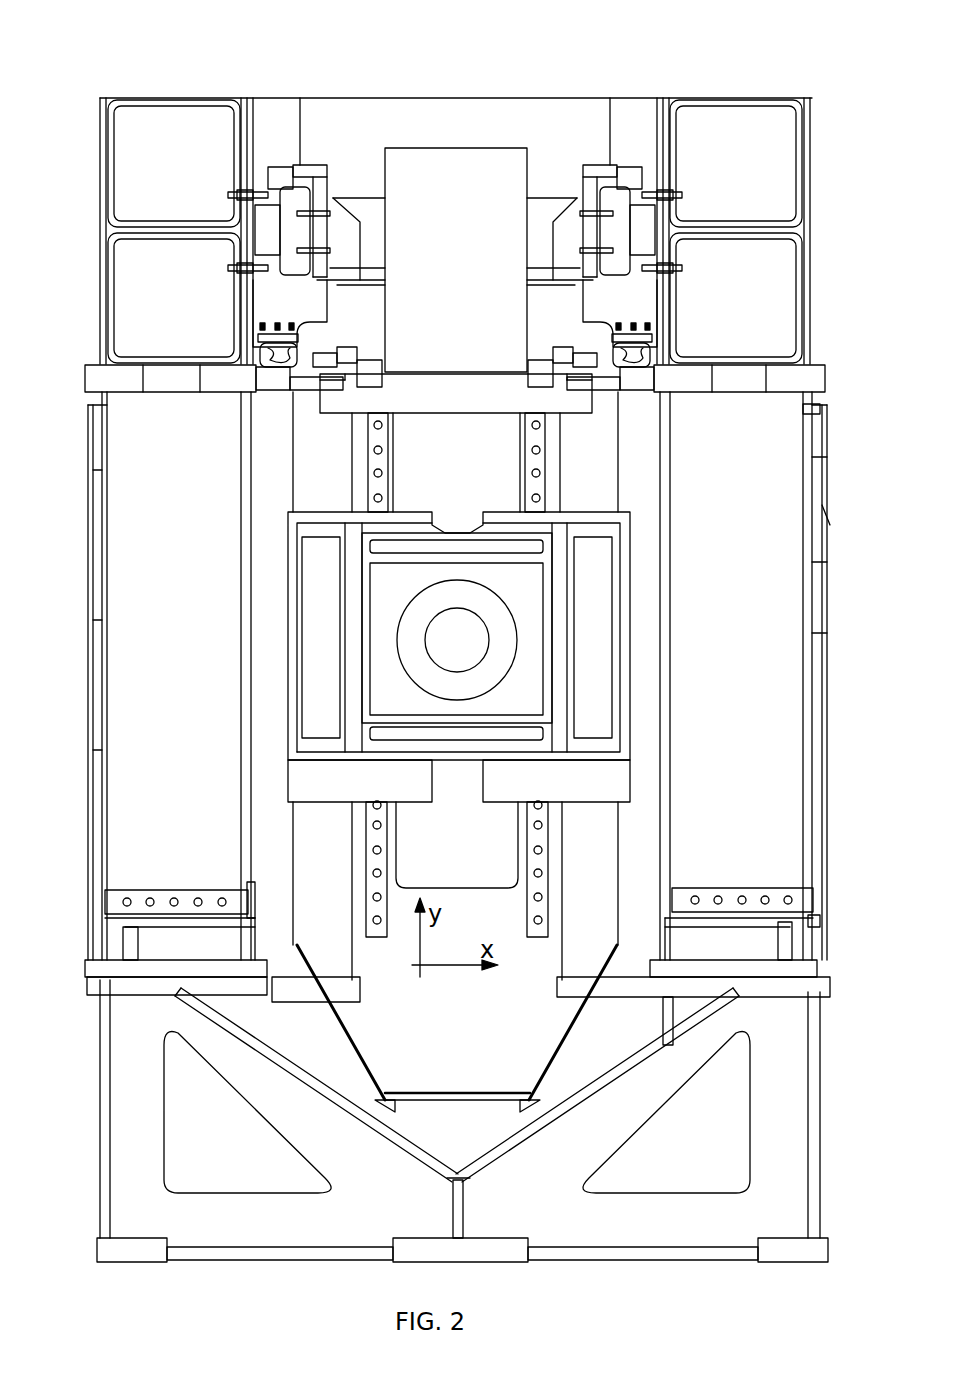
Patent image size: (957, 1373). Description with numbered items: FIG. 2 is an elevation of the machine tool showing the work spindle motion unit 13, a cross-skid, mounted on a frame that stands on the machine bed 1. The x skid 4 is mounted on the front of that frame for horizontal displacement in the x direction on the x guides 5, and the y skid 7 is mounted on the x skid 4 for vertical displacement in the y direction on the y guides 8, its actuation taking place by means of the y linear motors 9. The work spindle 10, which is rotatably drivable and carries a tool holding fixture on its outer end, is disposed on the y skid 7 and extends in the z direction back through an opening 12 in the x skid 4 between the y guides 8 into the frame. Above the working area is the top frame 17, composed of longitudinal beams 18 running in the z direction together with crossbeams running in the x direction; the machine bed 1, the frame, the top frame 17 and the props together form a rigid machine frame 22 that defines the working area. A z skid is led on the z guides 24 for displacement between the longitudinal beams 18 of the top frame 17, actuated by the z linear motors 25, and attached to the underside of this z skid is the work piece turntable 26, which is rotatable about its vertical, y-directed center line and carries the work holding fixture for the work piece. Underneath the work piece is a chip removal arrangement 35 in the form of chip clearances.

The machine bed 1 is at (552, 1200).
The x skid 4 is at (643, 752).
The x guides 5 is at (112, 901).
The y skid 7 is at (627, 663).
The y guides 8 is at (373, 907).
The y linear motors 9 is at (322, 484).
The work spindle 10 is at (453, 638).
The opening 12 is at (443, 486).
The work spindle motion unit 13 is at (690, 586).
The top frame 17 is at (168, 90).
The longitudinal beams 18 is at (140, 161).
The machine frame 22 is at (611, 78).
The z guides 24 is at (272, 366).
The z linear motors 25 is at (297, 200).
The work piece turntable 26 is at (440, 402).
The chip removal arrangement 35 is at (545, 1073).